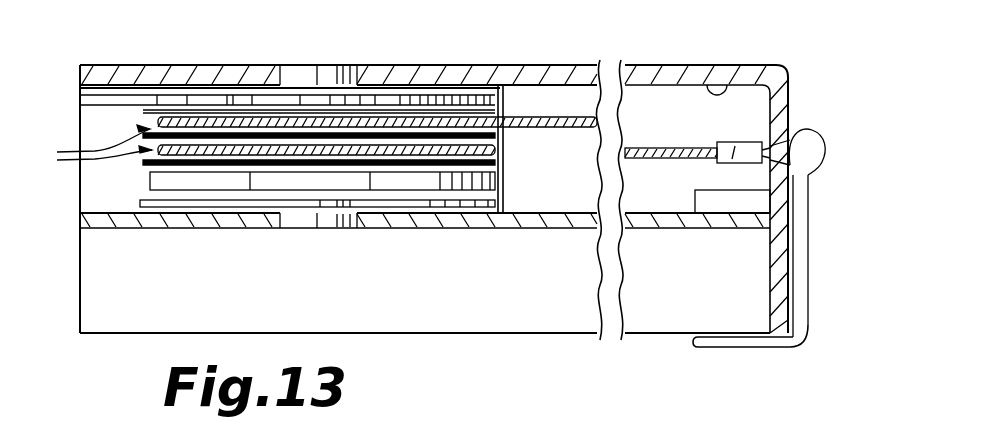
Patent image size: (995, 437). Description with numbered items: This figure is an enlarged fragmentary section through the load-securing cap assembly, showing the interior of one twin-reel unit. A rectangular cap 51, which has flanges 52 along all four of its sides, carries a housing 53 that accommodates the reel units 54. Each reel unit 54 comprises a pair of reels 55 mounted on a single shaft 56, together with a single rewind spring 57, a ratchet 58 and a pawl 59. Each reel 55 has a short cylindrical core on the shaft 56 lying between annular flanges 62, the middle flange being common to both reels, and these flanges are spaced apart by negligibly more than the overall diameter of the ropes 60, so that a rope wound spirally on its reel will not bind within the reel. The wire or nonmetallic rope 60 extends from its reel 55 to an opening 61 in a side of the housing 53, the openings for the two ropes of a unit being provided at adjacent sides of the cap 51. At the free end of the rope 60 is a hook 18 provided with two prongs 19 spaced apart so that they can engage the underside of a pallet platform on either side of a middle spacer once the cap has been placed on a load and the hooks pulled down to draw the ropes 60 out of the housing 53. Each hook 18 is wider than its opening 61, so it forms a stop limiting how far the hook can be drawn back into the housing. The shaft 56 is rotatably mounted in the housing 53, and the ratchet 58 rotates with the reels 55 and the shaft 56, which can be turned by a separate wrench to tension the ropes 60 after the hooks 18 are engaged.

The hook 18 is at (813, 207).
The prong 19 is at (746, 344).
The rectangular cap 51 is at (585, 68).
The flange 52 is at (636, 315).
The housing 53 is at (720, 87).
The reel unit 54 is at (503, 96).
The reel 55 is at (90, 150).
The shaft 56 is at (320, 68).
The rewind spring 57 is at (385, 183).
The ratchet 58 is at (428, 98).
The pawl 59 is at (130, 100).
The rope 60 is at (257, 150).
The opening 61 is at (790, 136).
The annular flange 62 is at (143, 112).